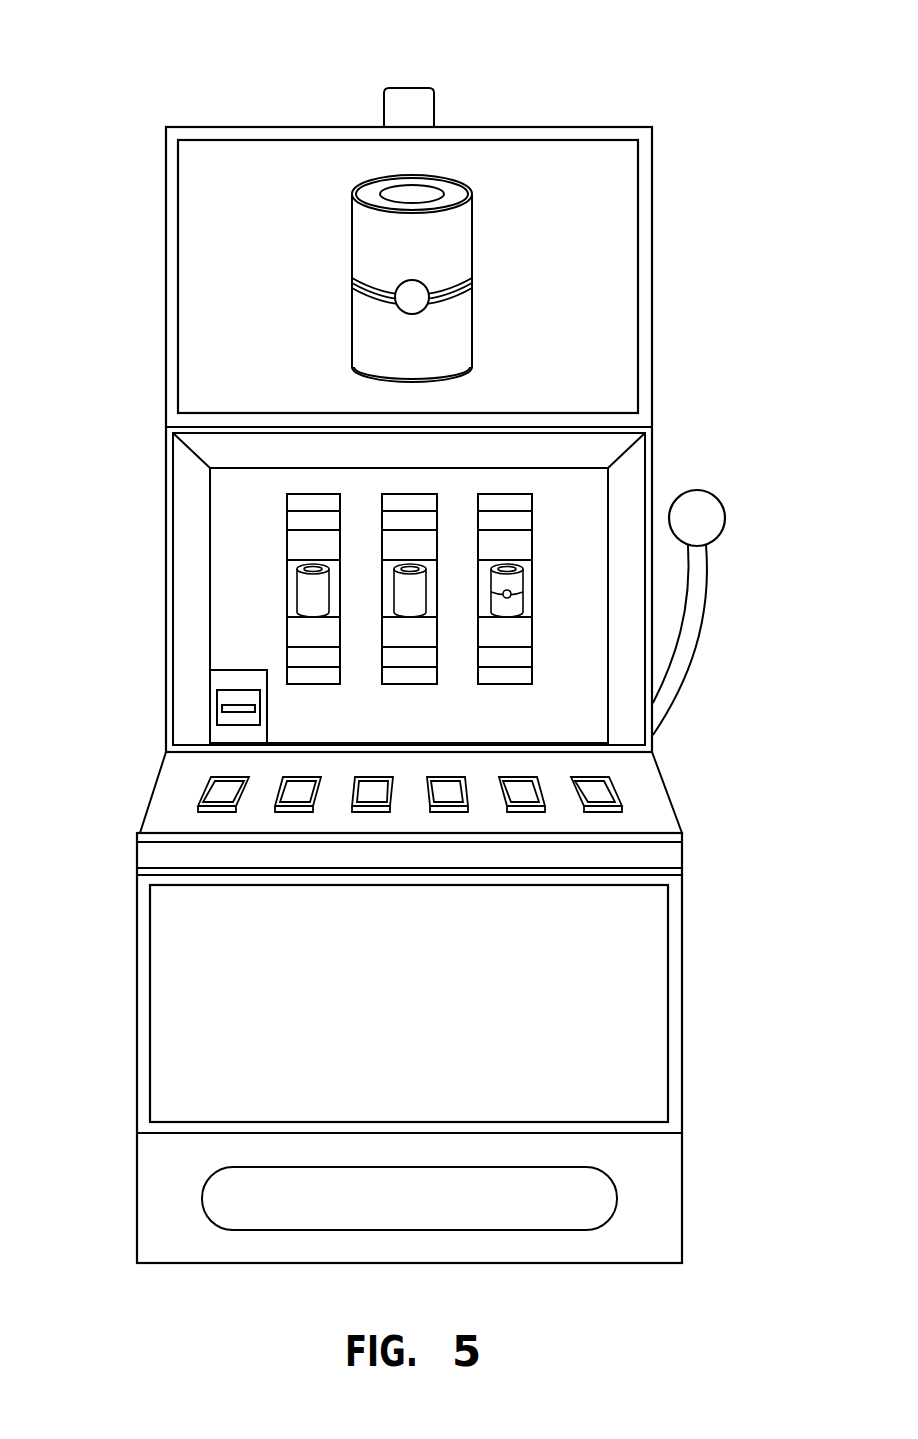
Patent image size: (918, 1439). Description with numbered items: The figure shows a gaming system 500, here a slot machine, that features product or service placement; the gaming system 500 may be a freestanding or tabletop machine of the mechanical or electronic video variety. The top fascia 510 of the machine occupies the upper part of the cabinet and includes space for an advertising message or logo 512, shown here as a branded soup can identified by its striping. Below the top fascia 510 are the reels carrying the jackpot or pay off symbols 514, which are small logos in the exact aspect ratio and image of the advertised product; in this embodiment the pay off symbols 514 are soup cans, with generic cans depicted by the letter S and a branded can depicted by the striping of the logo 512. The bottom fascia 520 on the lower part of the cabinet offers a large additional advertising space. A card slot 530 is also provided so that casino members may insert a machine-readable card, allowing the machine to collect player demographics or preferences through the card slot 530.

The gaming system 500 is at (100, 76).
The top fascia 510 is at (627, 217).
The advertising message or logo 512 is at (473, 228).
The pay off symbols 514 is at (500, 580).
The bottom fascia 520 is at (165, 1017).
The card slot 530 is at (217, 708).